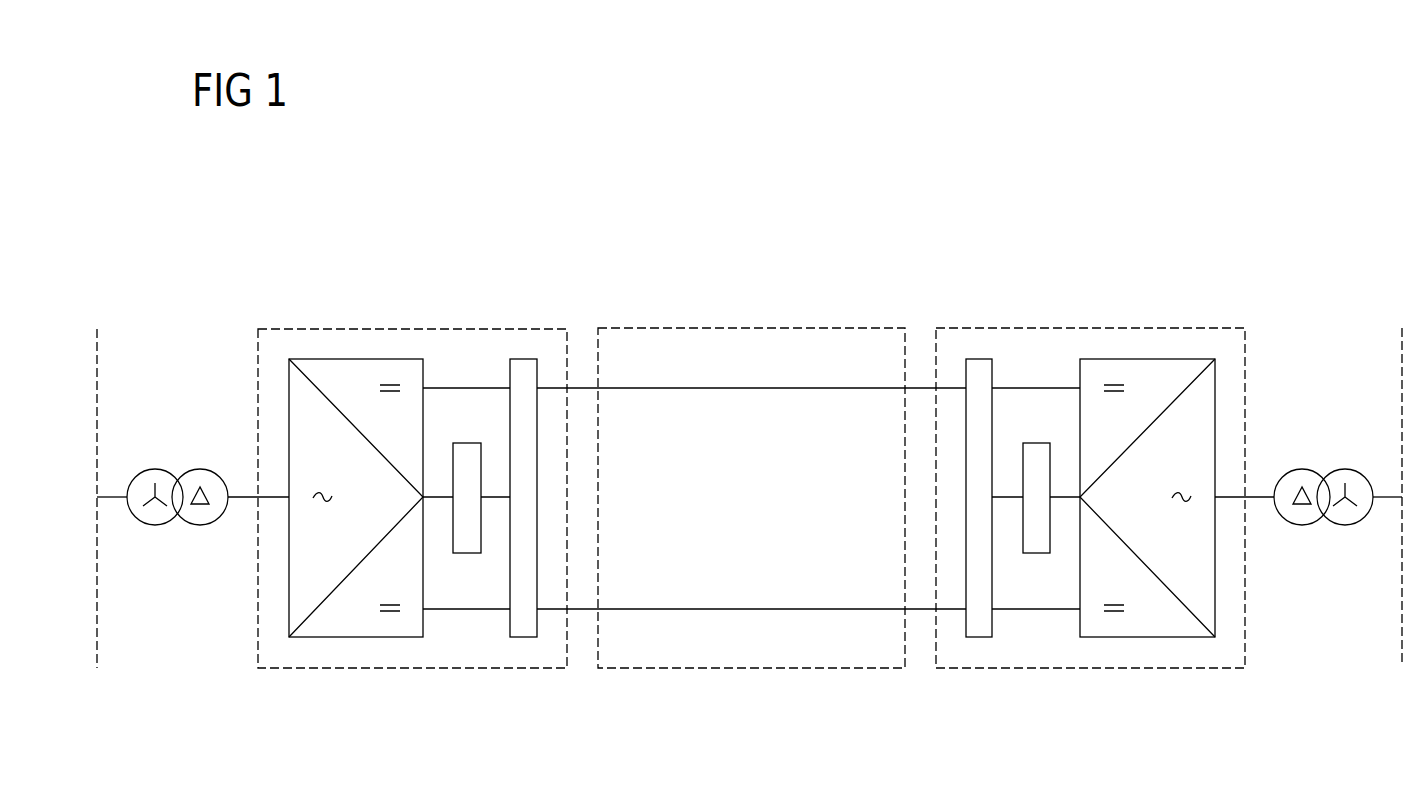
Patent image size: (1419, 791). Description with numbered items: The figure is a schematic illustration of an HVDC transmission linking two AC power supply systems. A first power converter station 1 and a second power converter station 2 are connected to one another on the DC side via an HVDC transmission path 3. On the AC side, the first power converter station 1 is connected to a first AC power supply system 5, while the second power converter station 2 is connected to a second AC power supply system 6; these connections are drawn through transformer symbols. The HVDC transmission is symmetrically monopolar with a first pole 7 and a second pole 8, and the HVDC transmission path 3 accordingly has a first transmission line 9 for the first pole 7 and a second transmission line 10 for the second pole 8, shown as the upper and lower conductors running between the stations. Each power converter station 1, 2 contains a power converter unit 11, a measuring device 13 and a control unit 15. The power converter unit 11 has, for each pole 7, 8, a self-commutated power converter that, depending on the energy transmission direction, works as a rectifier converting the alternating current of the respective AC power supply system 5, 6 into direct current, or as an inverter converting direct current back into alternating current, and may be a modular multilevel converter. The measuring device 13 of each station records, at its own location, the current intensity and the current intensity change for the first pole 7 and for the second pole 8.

The first power converter station 1 is at (362, 329).
The second power converter station 2 is at (1145, 329).
The HVDC transmission path 3 is at (750, 329).
The first AC power supply system 5 is at (97, 357).
The second AC power supply system 6 is at (1402, 352).
The first pole 7 is at (1053, 384).
The second pole 8 is at (1053, 614).
The first transmission line 9 is at (788, 388).
The second transmission line 10 is at (788, 609).
The power converter unit 11 is at (353, 637).
The measuring device 13 is at (522, 637).
The control unit 15 is at (462, 553).